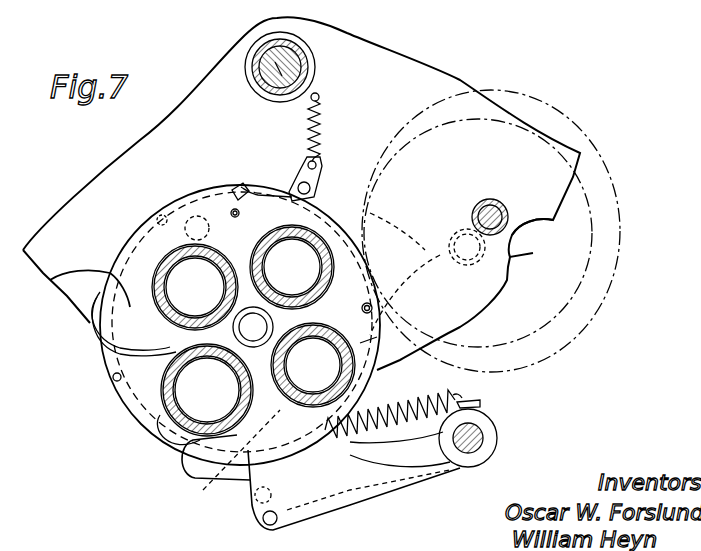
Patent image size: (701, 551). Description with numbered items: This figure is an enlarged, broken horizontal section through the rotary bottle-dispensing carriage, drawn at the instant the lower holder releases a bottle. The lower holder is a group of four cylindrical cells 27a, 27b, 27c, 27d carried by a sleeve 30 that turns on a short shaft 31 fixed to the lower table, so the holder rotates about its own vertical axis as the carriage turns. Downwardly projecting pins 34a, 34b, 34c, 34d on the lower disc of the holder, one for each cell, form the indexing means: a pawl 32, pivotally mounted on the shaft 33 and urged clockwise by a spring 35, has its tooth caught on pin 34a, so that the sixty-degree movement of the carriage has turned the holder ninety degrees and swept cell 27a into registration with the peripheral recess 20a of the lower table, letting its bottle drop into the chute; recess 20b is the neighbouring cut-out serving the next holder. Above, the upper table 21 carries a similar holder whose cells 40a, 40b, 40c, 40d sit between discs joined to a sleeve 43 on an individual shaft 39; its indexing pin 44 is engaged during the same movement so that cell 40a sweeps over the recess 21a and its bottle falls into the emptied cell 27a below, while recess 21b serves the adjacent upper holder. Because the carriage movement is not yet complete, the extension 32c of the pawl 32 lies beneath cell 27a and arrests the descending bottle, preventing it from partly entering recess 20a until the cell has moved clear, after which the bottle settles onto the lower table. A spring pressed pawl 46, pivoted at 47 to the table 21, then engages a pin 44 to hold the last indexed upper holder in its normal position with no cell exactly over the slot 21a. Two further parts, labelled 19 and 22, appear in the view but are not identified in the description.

The shaft bearing 19 is at (305, 68).
The shaft 22 is at (272, 90).
The upper table 21 is at (413, 72).
The recess 21a is at (290, 354).
The recess 21b is at (533, 218).
The recess 20a is at (112, 386).
The recess 20b is at (533, 253).
The cell 27a is at (160, 415).
The cell 27b is at (87, 308).
The cell 27c is at (197, 215).
The cell 27d is at (405, 287).
The pin 34a is at (230, 462).
The pin 34b is at (112, 378).
The pin 34c is at (160, 216).
The pin 34d is at (397, 225).
The cell 40a is at (254, 396).
The cell 40b is at (160, 263).
The cell 40c is at (303, 233).
The cell 40d is at (377, 337).
The sleeve 30 is at (452, 262).
The shaft 31 is at (466, 260).
The pawl 32 is at (328, 488).
The extension 32c is at (200, 462).
The shaft 33 is at (483, 432).
The spring 35 is at (368, 410).
The shaft 39 is at (478, 216).
The sleeve 43 is at (503, 183).
The indexing pin 44 is at (373, 309).
The spring pressed pawl 46 is at (283, 191).
The pivot 47 is at (314, 186).